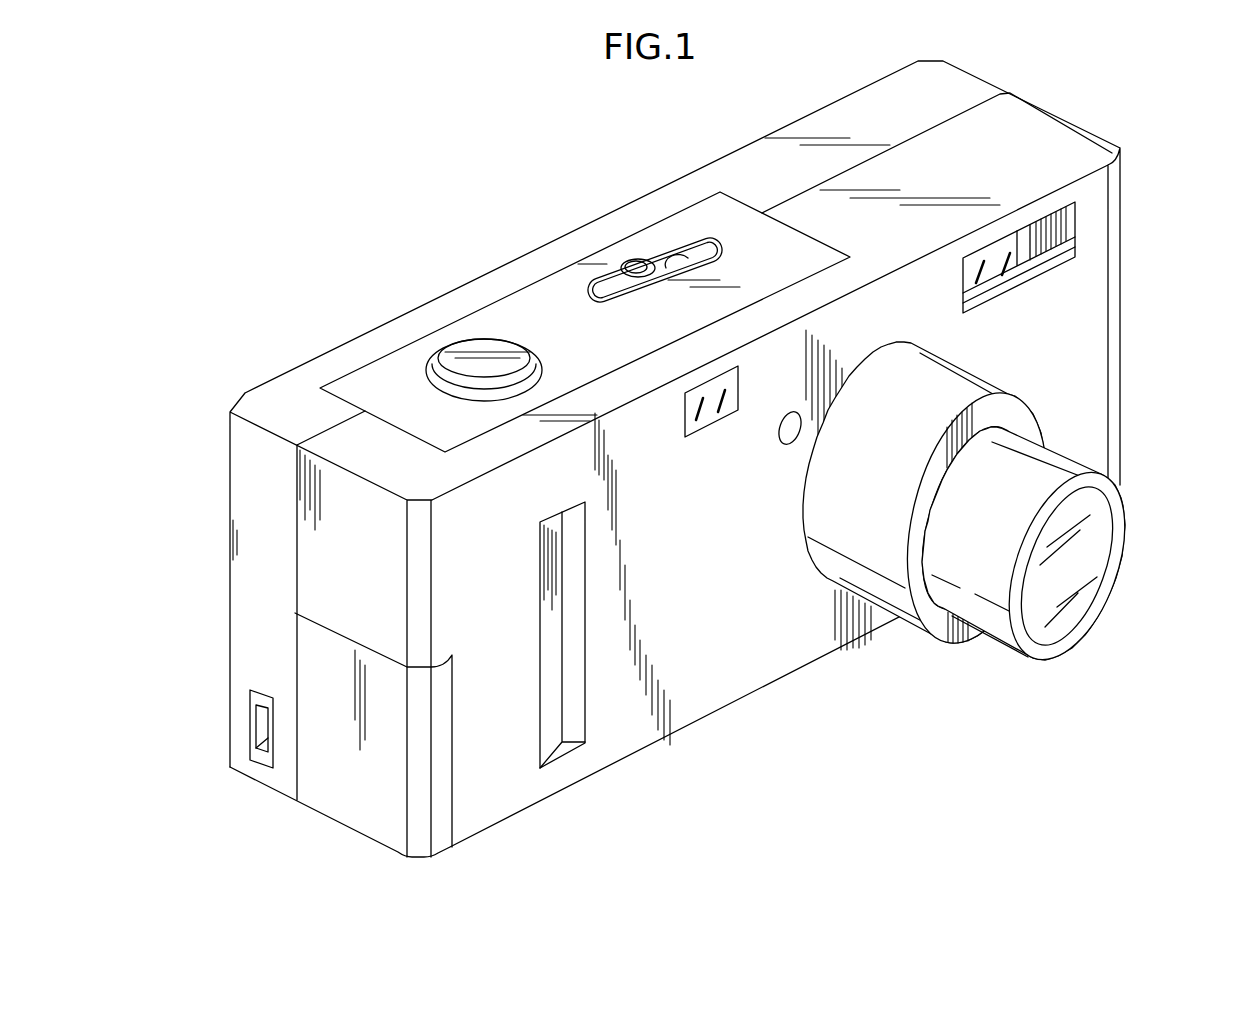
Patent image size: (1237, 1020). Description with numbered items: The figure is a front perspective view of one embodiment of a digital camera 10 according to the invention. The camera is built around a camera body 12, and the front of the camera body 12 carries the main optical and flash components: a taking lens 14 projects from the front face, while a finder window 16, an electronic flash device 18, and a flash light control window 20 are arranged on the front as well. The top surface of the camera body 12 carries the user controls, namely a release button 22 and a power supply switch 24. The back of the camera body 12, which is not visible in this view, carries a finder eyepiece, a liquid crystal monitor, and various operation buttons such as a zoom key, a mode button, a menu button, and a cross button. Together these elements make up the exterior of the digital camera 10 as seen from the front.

The digital camera 10 is at (320, 194).
The camera body 12 is at (757, 643).
The taking lens 14 is at (1085, 565).
The finder window 16 is at (995, 272).
The electronic flash device 18 is at (702, 417).
The flash light control window 20 is at (790, 447).
The release button 22 is at (470, 367).
The power supply switch 24 is at (640, 268).